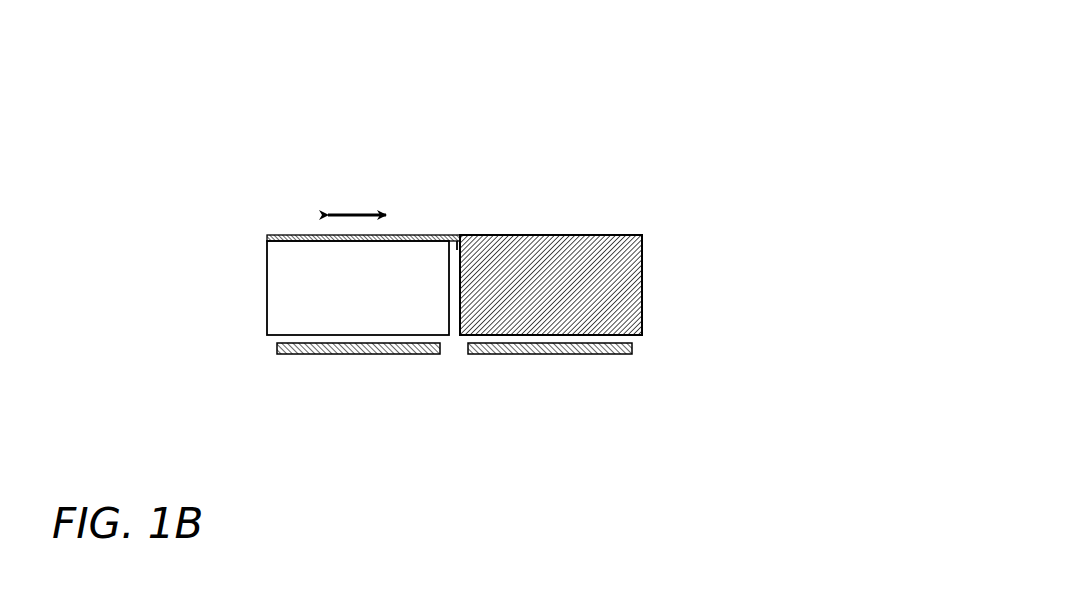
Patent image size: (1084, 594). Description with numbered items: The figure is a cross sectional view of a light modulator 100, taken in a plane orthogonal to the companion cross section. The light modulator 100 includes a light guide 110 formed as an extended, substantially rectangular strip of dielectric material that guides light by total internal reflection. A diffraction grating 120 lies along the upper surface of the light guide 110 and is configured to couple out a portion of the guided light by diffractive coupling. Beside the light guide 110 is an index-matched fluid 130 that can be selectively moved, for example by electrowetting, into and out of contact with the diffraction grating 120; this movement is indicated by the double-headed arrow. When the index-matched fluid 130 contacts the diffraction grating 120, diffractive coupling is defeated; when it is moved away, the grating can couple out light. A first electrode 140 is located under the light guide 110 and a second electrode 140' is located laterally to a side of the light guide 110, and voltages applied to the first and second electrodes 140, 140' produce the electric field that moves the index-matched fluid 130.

The light modulator 100 is at (740, 93).
The light guide 110 is at (380, 301).
The diffraction grating 120 is at (408, 215).
The index-matched fluid 130 is at (643, 282).
The first electrode 140 is at (365, 373).
The second electrode 140' is at (560, 373).